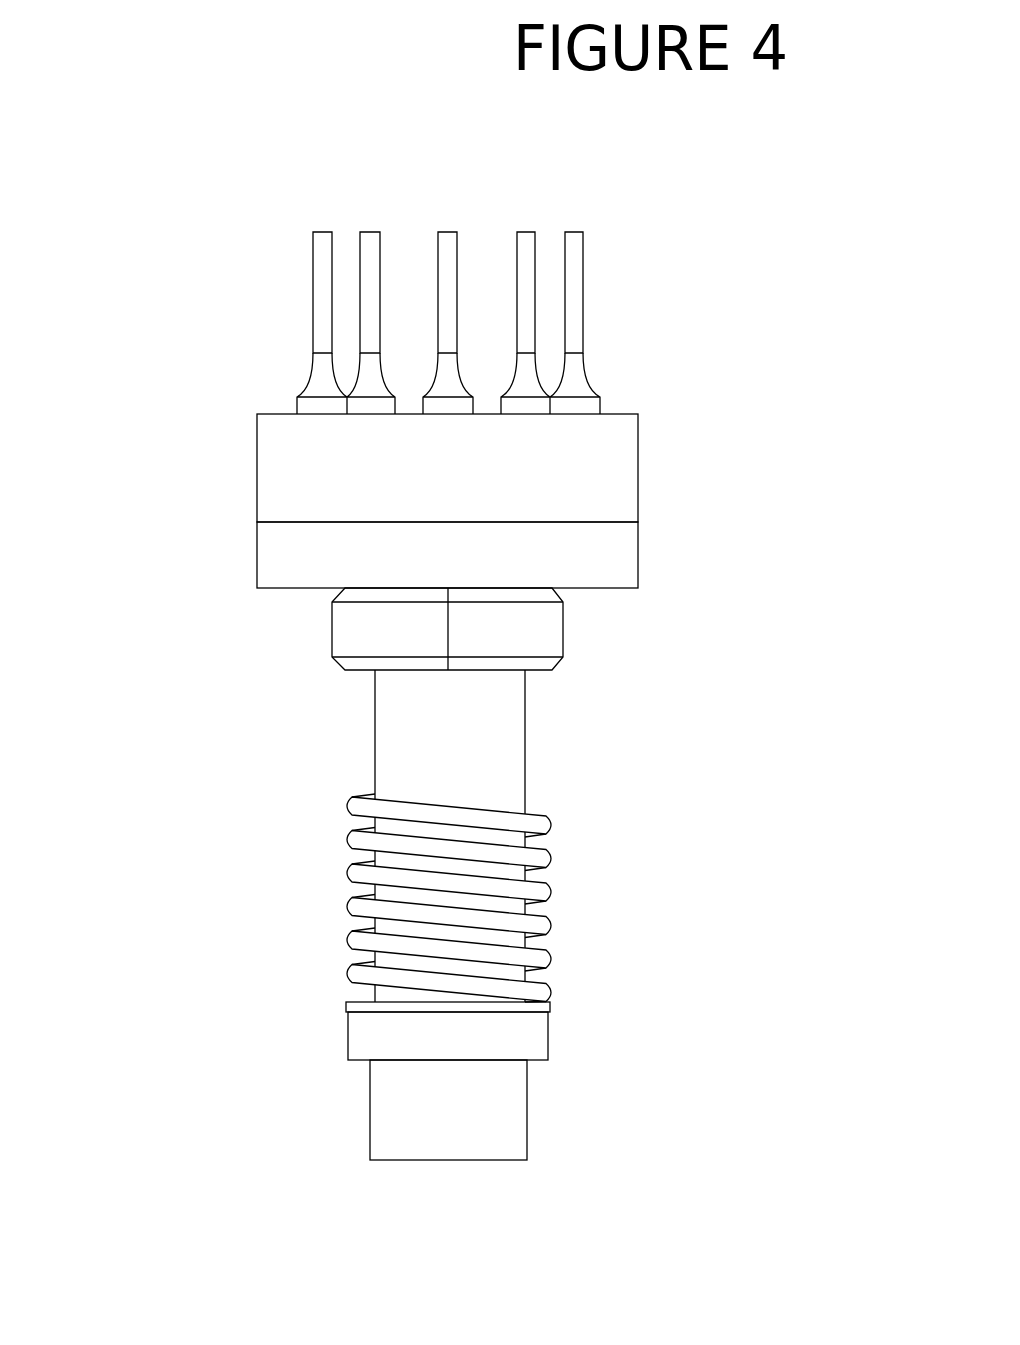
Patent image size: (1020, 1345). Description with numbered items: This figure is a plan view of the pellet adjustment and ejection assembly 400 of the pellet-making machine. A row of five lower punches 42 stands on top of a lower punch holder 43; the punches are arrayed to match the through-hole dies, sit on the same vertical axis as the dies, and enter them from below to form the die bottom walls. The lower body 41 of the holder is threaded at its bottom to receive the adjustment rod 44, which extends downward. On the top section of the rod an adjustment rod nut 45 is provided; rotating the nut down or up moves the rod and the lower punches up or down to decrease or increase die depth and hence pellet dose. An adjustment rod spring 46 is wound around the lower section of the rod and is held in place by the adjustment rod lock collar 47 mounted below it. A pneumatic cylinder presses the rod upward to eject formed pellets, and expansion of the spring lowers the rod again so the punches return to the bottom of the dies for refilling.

The sensor assembly 400 is at (405, 195).
The header base 41 is at (613, 543).
The lower punches 42 is at (573, 282).
The lower punch holder 43 is at (609, 475).
The adjustment rod 44 is at (380, 699).
The adjustment rod nut 45 is at (424, 628).
The adjustment rod spring 46 is at (535, 823).
The adjustment rod lock collar 47 is at (396, 1029).